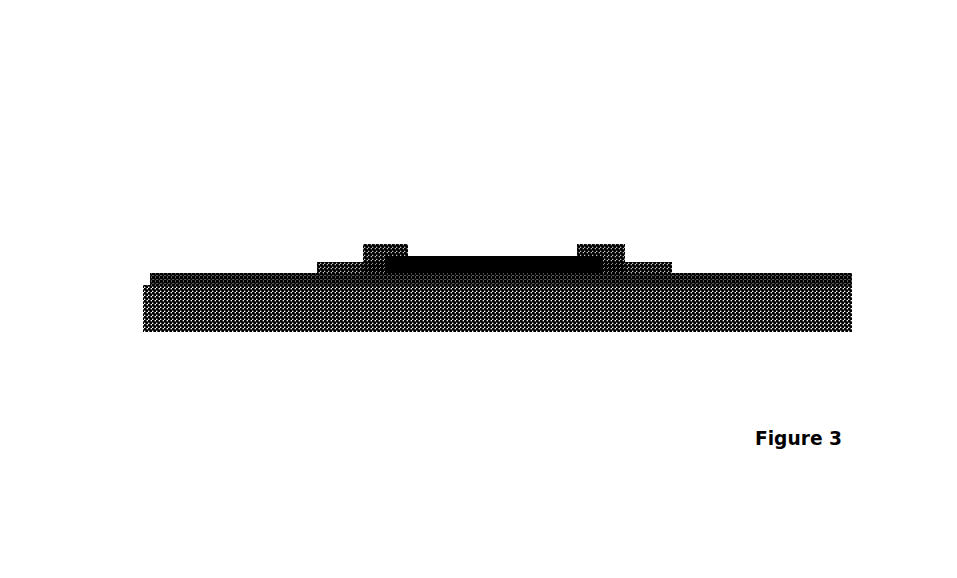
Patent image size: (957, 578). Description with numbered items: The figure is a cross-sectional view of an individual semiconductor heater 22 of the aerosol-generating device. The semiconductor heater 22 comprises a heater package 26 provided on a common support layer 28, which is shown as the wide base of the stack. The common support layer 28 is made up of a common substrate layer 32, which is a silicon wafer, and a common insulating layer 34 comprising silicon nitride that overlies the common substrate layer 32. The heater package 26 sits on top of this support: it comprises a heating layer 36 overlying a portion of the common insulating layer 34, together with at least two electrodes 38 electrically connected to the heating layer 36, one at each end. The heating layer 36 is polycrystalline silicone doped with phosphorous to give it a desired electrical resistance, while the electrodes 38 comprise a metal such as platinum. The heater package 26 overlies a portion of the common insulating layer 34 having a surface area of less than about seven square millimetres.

The semiconductor heater 22 is at (647, 202).
The heater package 26 is at (122, 272).
The common support layer 28 is at (122, 272).
The common substrate layer 32 is at (248, 308).
The common insulating layer 34 is at (182, 273).
The heating layer 36 is at (482, 257).
The electrodes 38 is at (370, 253).